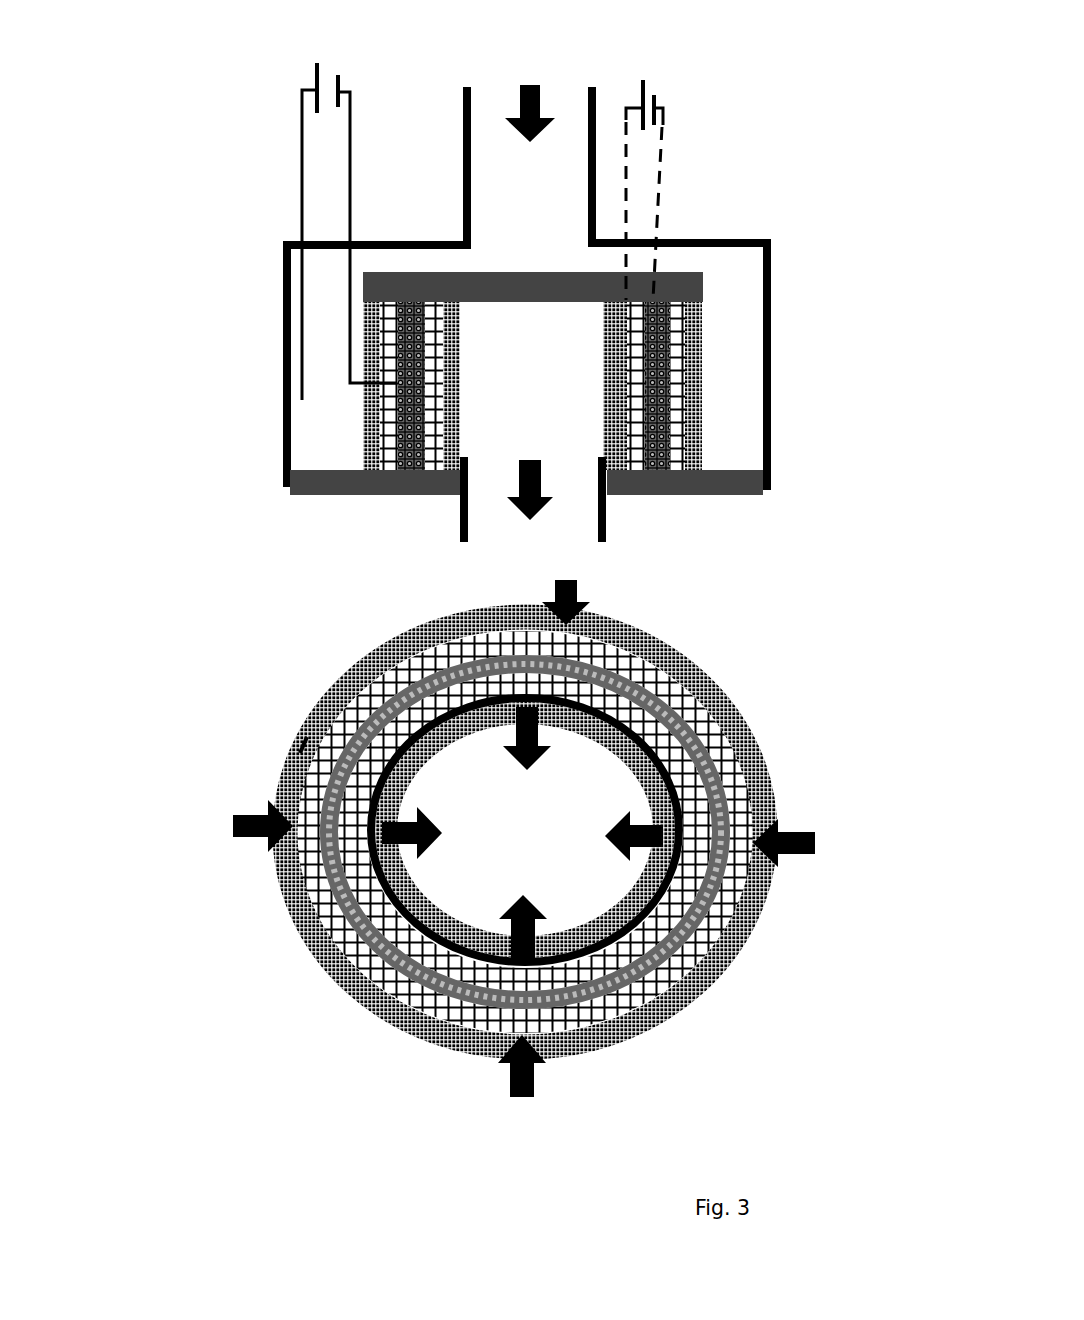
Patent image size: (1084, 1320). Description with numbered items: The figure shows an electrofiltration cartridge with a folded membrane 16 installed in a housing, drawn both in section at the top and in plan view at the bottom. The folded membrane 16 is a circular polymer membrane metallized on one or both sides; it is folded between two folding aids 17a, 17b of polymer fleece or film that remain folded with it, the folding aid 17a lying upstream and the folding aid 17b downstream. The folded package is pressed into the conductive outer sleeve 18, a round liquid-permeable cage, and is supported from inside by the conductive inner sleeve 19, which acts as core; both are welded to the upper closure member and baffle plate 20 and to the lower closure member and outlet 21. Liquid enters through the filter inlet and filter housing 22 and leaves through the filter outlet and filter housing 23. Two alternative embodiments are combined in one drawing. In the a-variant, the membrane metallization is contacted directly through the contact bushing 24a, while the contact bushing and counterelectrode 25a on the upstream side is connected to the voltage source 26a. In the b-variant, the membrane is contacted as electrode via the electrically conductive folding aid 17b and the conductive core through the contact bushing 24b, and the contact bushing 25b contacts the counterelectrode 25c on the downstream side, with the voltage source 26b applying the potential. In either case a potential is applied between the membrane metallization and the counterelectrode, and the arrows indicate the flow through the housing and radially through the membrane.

The folded membrane 16 is at (460, 667).
The folding aid 17a is at (360, 707).
The folding aid 17b is at (680, 762).
The conductive outer sleeve of the cartridge 18 is at (375, 663).
The conductive inner sleeve of the cartridge 19 is at (620, 737).
The upper closure member and baffle plate of the cartridge 20 is at (555, 290).
The lower closure member and outlet of the cartridge 21 is at (707, 482).
The filter inlet and filter housing 22 is at (490, 91).
The filter outlet and filter housing 23 is at (560, 524).
The contact bushing 24a is at (352, 163).
The contact bushing 24b is at (668, 143).
The contact bushing and counterelectrode 25a is at (298, 737).
The contact bushing 25b is at (626, 135).
The counterelectrode 25c is at (683, 808).
The voltage source 26a is at (310, 68).
The voltage source 26b is at (660, 87).